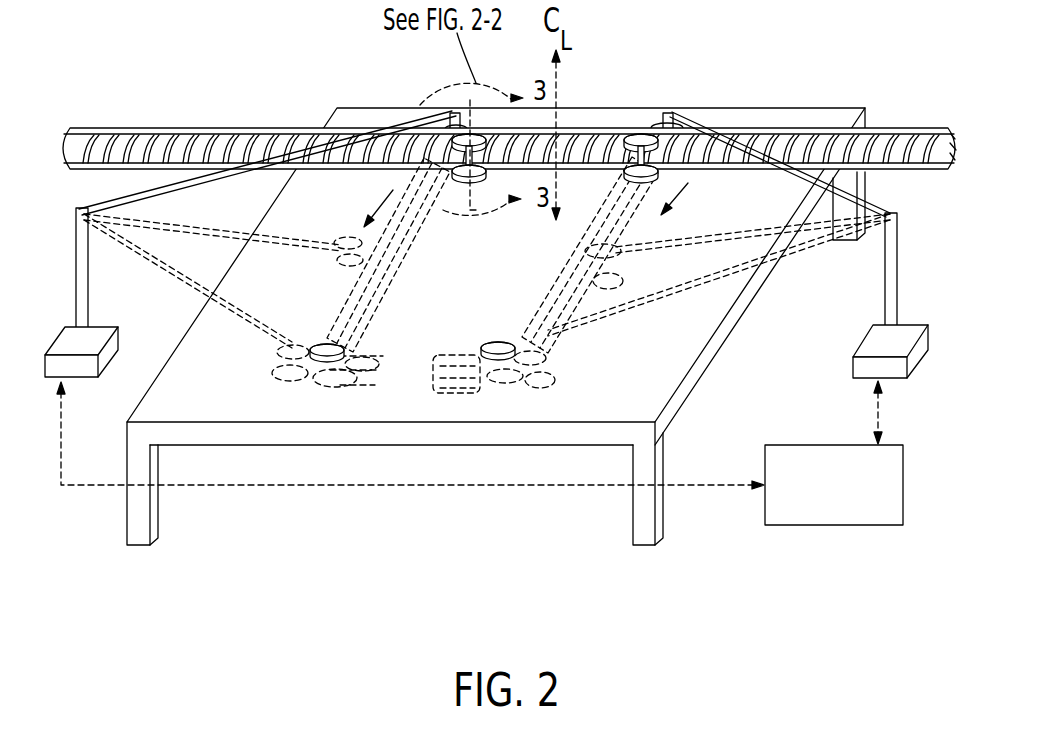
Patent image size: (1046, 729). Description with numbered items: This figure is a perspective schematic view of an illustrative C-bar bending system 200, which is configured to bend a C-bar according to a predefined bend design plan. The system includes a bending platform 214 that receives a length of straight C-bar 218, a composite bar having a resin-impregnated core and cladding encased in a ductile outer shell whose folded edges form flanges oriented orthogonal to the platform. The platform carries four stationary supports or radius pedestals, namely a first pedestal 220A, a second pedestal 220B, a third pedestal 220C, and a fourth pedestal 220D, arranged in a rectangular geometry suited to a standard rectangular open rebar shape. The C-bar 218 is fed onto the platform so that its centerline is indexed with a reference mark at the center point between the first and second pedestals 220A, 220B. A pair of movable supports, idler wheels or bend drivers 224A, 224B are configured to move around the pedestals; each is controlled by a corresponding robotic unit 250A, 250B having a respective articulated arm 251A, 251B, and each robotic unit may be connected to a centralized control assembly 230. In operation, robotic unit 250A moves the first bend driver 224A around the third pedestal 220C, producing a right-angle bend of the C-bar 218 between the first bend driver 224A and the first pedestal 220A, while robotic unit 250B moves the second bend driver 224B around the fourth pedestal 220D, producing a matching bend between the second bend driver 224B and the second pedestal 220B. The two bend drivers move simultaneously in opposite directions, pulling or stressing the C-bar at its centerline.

The bending system 200 is at (308, 99).
The bending platform 214 is at (161, 402).
The C-bar 218 is at (762, 127).
The first pedestal 220A is at (467, 184).
The second pedestal 220B is at (636, 134).
The third pedestal 220C is at (345, 350).
The fourth pedestal 220D is at (496, 346).
The first bend driver 224A is at (448, 113).
The second bend driver 224B is at (668, 113).
The control assembly 230 is at (845, 527).
The robotic unit 250A is at (80, 368).
The robotic unit 250B is at (912, 337).
The articulated arm 251A is at (86, 250).
The articulated arm 251B is at (883, 264).